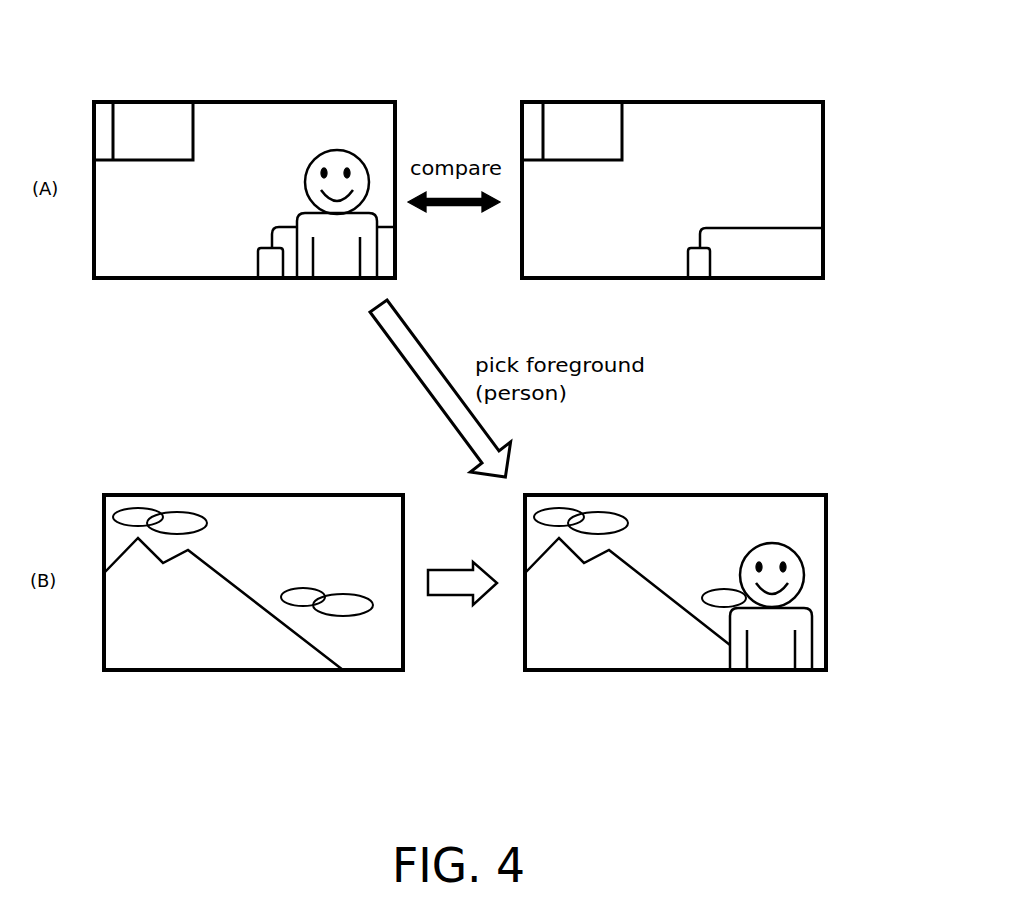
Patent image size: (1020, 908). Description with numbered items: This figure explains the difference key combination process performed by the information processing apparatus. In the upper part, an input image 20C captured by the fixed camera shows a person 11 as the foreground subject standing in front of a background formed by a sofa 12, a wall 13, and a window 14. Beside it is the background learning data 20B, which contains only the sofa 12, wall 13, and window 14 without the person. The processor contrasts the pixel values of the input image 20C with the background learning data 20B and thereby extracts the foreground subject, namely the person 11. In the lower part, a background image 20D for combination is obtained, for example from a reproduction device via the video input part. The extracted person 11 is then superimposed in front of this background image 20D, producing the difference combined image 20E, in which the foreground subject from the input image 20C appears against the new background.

The person 11 is at (335, 152).
The sofa 12 is at (273, 267).
The wall 13 is at (137, 225).
The window 14 is at (135, 147).
The background learning data 20B is at (667, 98).
The input image 20C is at (228, 98).
The background image 20D is at (180, 675).
The difference combined image 20E is at (642, 680).